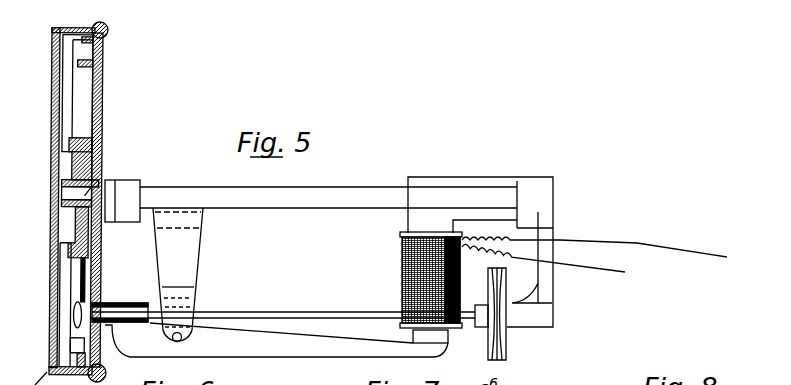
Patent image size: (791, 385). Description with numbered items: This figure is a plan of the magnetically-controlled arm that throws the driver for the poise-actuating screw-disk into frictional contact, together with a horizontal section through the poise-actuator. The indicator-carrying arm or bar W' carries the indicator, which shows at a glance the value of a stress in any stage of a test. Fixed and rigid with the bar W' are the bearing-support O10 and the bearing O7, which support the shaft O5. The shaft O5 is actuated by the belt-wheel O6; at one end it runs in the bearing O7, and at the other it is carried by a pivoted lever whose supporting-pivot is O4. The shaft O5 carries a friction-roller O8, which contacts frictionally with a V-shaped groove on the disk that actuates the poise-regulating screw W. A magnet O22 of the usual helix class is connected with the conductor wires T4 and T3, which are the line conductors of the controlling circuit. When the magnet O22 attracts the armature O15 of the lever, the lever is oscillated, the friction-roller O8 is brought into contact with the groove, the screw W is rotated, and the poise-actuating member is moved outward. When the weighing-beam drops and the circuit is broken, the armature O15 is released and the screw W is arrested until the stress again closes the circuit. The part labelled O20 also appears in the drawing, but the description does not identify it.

The poise-regulating screw W is at (105, 202).
The indicator-carrying arm or bar W' is at (346, 252).
The bearing-support O10 is at (201, 250).
The supporting-pivot O4 is at (198, 310).
The shaft O5 is at (312, 310).
The magnet O22 is at (402, 262).
The armature O15 is at (442, 338).
The belt-wheel O6 is at (507, 343).
The bearing O7 is at (547, 300).
The line conductor T4 is at (555, 271).
The line conductor T3 is at (597, 258).
The guide plate O20 is at (68, 281).
The friction-roller O8 is at (78, 317).